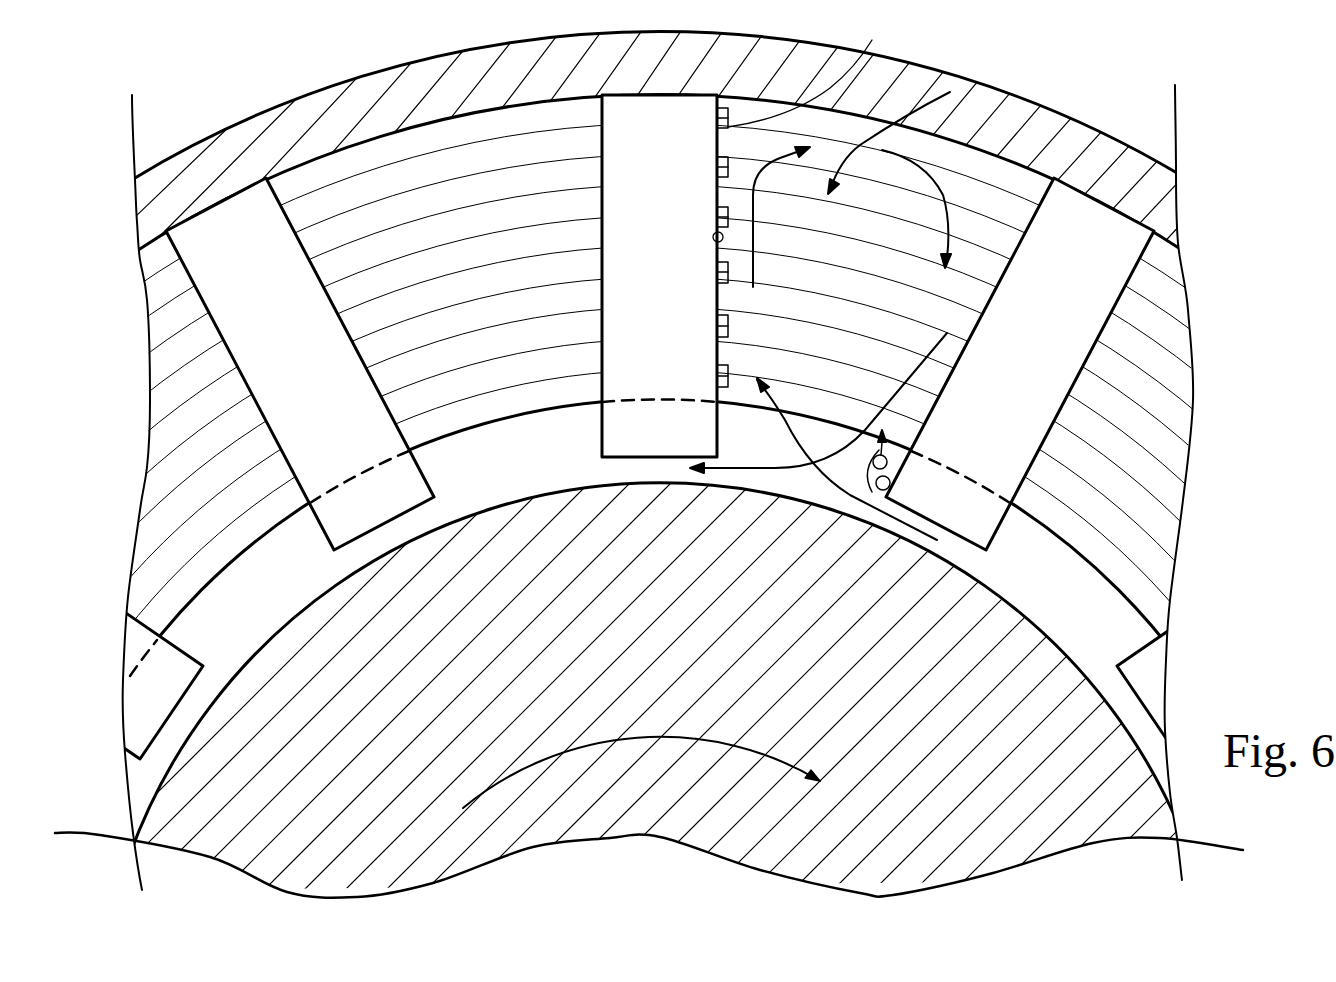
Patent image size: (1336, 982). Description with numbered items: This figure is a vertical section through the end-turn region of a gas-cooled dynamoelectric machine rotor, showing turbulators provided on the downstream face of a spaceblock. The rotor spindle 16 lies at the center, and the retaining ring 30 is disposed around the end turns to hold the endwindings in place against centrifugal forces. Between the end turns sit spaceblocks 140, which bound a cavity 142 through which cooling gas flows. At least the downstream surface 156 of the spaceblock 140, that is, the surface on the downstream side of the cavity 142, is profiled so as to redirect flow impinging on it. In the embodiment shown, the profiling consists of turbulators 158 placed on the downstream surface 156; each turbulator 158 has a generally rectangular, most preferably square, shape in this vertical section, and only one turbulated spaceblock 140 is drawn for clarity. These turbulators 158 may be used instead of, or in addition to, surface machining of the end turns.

The rotor spindle 16 is at (1020, 817).
The retaining ring 30 is at (1012, 111).
The spaceblock 140 is at (633, 148).
The cavity 142 is at (970, 92).
The downstream surface 156 is at (716, 241).
The turbulator 158 is at (728, 172).